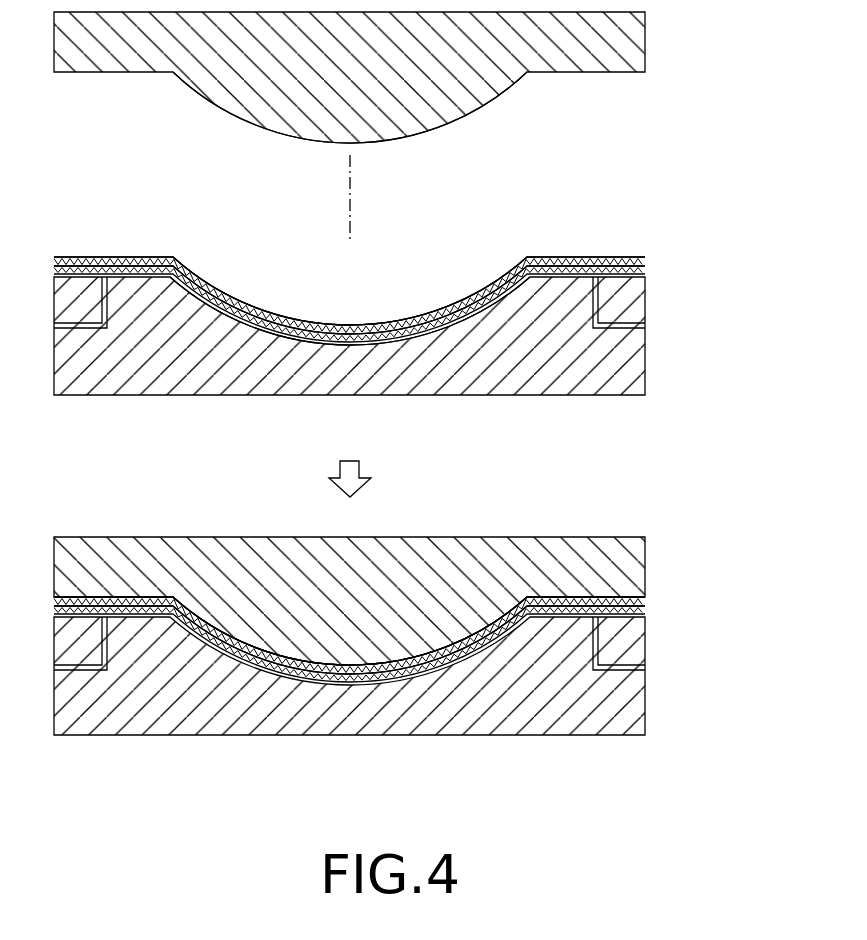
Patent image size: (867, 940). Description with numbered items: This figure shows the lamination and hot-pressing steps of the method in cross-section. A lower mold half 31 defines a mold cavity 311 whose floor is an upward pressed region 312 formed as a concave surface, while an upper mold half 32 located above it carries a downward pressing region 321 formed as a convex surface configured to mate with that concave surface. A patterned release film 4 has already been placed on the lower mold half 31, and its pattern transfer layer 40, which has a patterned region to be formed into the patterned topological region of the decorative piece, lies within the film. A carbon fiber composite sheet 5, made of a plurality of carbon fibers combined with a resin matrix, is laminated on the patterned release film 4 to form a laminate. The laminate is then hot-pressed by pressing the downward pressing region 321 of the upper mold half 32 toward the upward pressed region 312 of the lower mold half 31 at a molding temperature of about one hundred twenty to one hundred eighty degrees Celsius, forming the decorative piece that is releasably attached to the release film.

The upper mold half 32 is at (405, 84).
The downward pressing region 321 is at (236, 118).
The lower mold half 31 is at (349, 337).
The mold cavity 311 is at (392, 285).
The upward pressed region 312 is at (247, 320).
The patterned release film 4 is at (410, 476).
The pattern transfer layer 40 is at (655, 256).
The carbon fiber composite sheet 5 is at (596, 257).